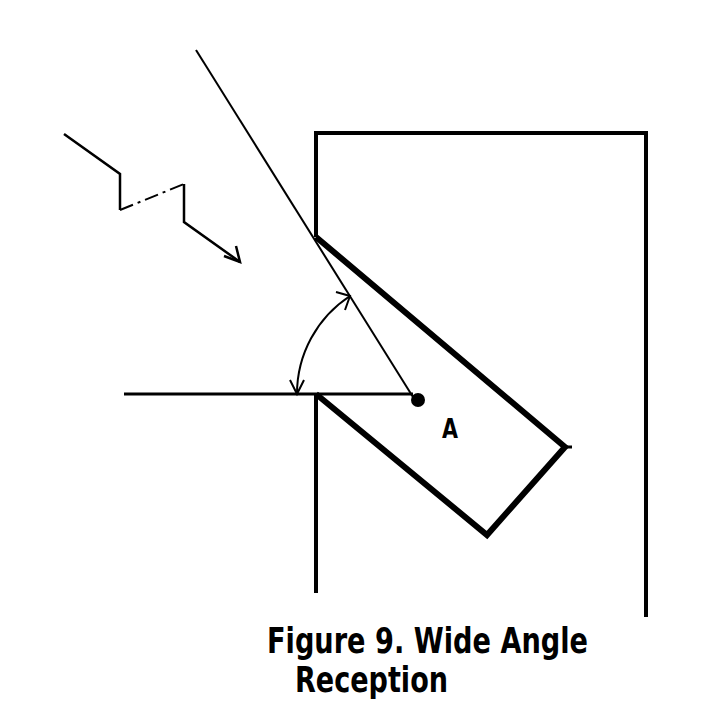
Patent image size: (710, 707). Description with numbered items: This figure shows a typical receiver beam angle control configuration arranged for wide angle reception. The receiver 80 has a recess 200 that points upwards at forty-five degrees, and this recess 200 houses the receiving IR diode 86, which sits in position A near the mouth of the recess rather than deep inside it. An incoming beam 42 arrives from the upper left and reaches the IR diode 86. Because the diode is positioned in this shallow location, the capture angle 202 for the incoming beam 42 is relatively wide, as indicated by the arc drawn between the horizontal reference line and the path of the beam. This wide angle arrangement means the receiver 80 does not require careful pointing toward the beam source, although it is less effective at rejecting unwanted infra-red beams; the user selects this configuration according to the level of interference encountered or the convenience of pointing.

The incoming beam 42 is at (190, 228).
The receiver 80 is at (646, 467).
The IR diode 86 is at (409, 408).
The recess 200 is at (415, 317).
The capture angle 202 is at (303, 349).